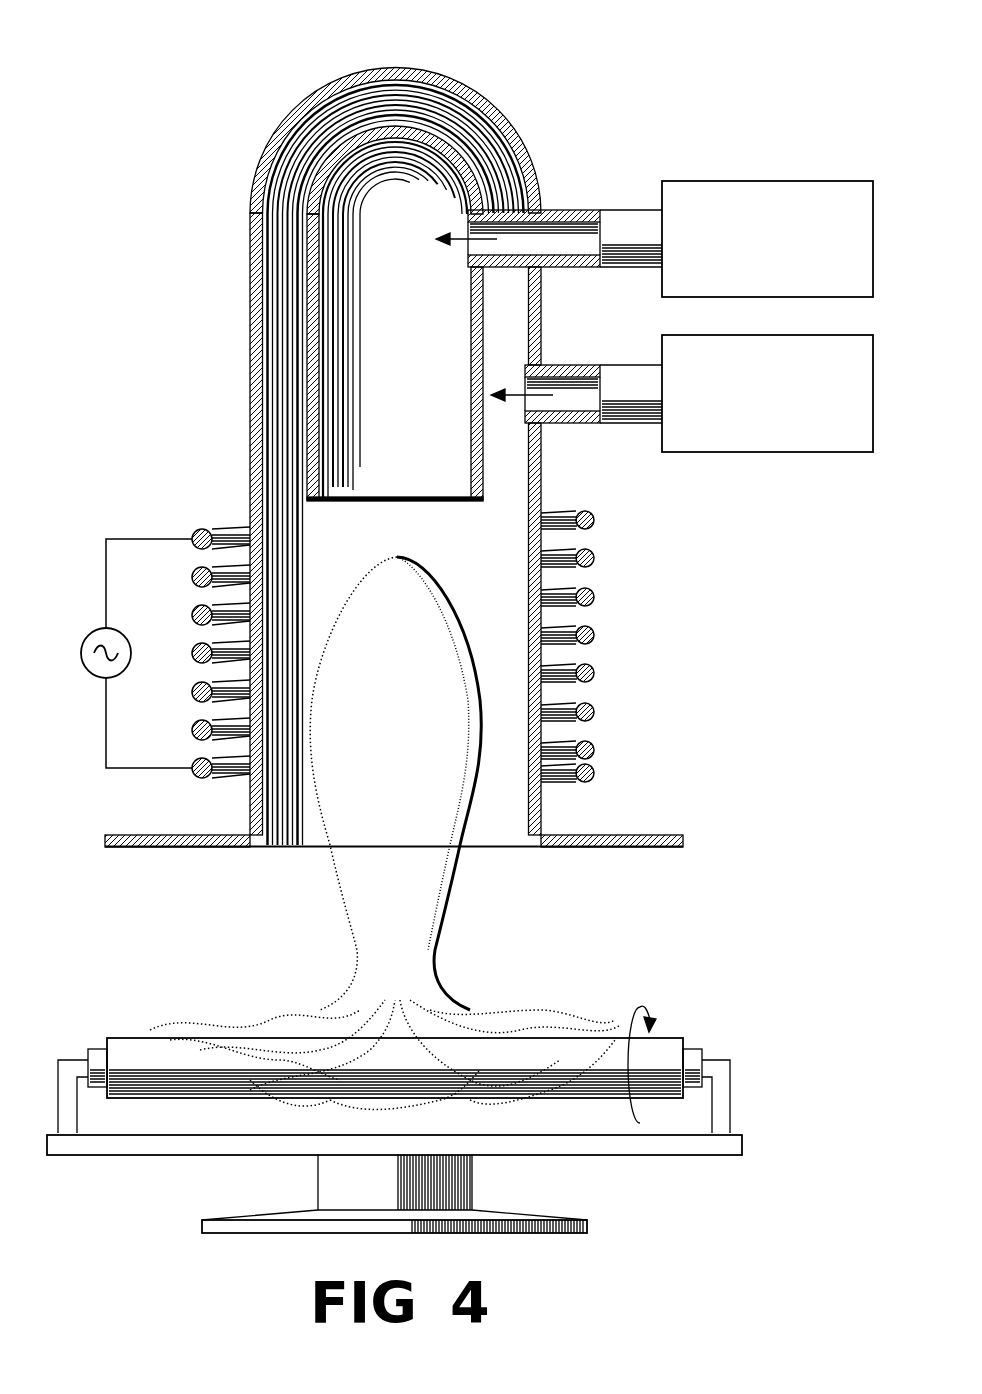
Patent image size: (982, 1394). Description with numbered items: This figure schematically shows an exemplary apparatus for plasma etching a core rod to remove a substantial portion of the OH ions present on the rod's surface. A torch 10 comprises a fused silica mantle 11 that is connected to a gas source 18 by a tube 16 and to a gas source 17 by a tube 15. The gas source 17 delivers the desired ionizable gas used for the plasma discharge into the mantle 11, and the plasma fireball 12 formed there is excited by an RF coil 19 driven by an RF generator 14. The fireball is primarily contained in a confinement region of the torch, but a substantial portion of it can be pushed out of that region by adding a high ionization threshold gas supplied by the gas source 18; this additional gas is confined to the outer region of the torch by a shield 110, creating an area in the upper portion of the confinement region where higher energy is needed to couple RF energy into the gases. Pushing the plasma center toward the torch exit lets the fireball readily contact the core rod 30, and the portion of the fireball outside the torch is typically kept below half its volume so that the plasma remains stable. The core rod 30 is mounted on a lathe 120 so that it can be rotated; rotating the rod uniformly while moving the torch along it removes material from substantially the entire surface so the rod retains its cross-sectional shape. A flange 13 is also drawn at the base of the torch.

The torch 10 is at (203, 45).
The fused silica mantle 11 is at (307, 100).
The shield 110 is at (432, 130).
The plasma fireball 12 is at (381, 567).
The flange 13 is at (495, 822).
The RF generator 14 is at (87, 636).
The tube 15 is at (627, 210).
The tube 16 is at (627, 365).
The gas source 17 is at (681, 181).
The gas source 18 is at (681, 335).
The RF coil 19 is at (222, 530).
The core rod 30 is at (125, 1040).
The lathe 120 is at (125, 1153).